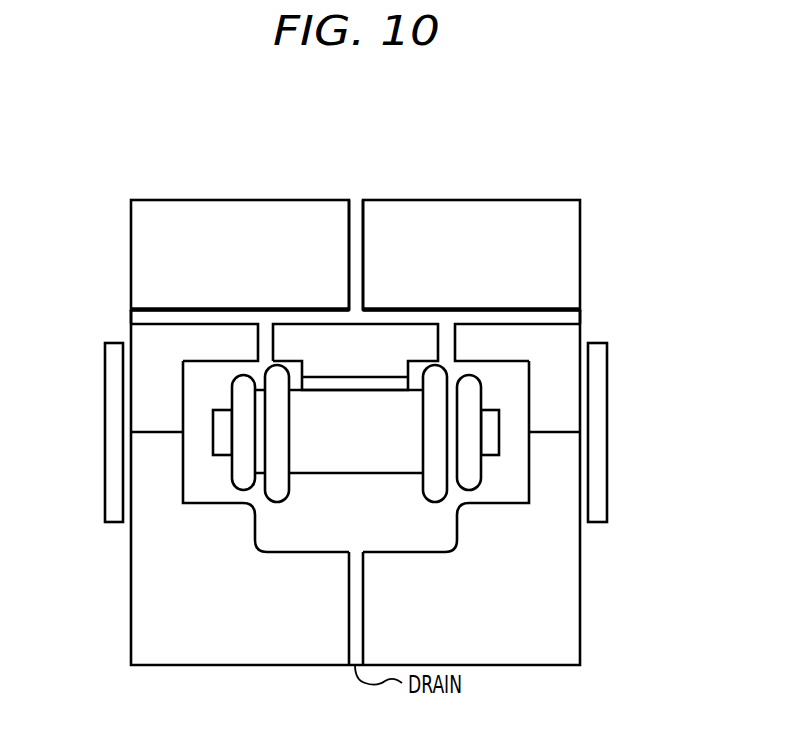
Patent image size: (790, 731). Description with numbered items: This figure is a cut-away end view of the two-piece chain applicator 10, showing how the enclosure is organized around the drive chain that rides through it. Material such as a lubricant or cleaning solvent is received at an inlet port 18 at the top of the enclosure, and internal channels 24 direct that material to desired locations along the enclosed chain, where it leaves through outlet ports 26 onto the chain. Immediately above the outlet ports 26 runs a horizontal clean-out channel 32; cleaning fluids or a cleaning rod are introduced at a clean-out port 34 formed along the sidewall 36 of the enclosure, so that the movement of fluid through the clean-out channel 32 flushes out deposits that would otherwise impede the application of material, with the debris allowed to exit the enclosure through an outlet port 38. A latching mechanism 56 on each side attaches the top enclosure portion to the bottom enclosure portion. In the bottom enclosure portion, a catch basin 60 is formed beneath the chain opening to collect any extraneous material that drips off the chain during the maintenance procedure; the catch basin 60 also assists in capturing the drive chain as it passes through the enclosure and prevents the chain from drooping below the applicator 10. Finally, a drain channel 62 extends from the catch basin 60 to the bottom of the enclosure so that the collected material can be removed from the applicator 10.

The applicator 10 is at (537, 183).
The inlet port 18 is at (353, 207).
The internal channels 24 is at (349, 252).
The outlet ports 26 is at (275, 344).
The clean-out channel 32 is at (192, 317).
The clean-out port 34 is at (581, 318).
The sidewall 36 is at (581, 247).
The outlet port 38 is at (131, 313).
The latching mechanism 56 is at (104, 430).
The catch basin 60 is at (442, 538).
The drain channel 62 is at (363, 617).